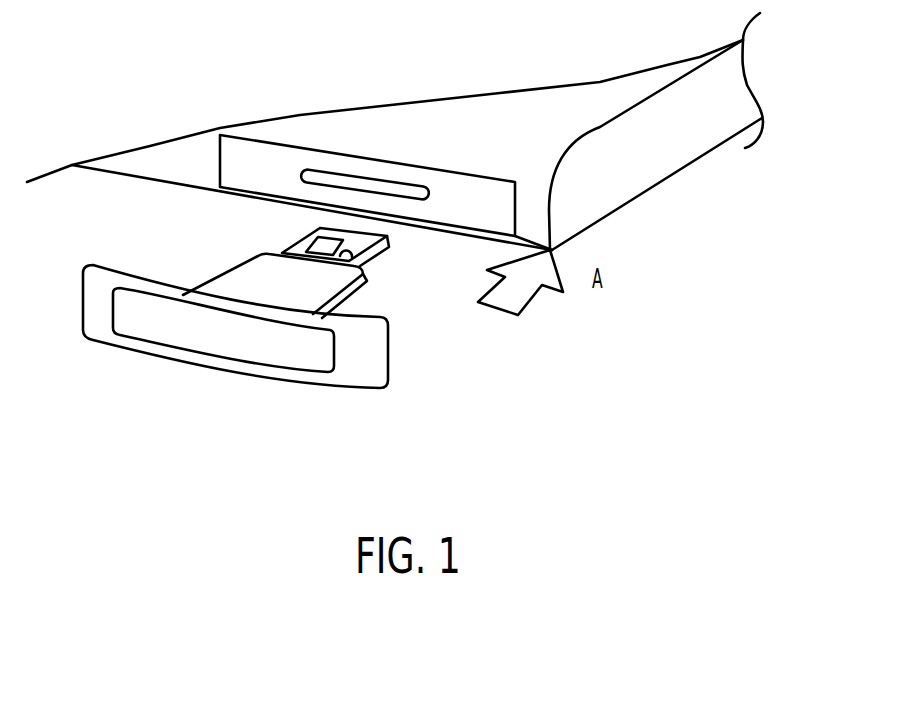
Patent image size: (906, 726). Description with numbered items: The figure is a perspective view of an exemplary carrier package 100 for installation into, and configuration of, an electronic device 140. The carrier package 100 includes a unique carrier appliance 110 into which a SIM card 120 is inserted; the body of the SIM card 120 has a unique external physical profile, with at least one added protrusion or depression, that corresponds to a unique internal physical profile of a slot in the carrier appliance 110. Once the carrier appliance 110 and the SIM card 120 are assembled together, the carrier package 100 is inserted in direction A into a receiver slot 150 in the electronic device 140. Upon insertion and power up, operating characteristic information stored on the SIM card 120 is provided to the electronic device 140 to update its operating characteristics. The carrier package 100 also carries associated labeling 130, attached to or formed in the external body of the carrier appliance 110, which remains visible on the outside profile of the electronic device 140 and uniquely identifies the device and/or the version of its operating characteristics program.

The carrier package 100 is at (289, 347).
The carrier appliance 110 is at (415, 388).
The SIM card 120 is at (413, 268).
The associated labeling 130 is at (225, 350).
The electronic device 140 is at (622, 190).
The receiver slot 150 is at (264, 184).